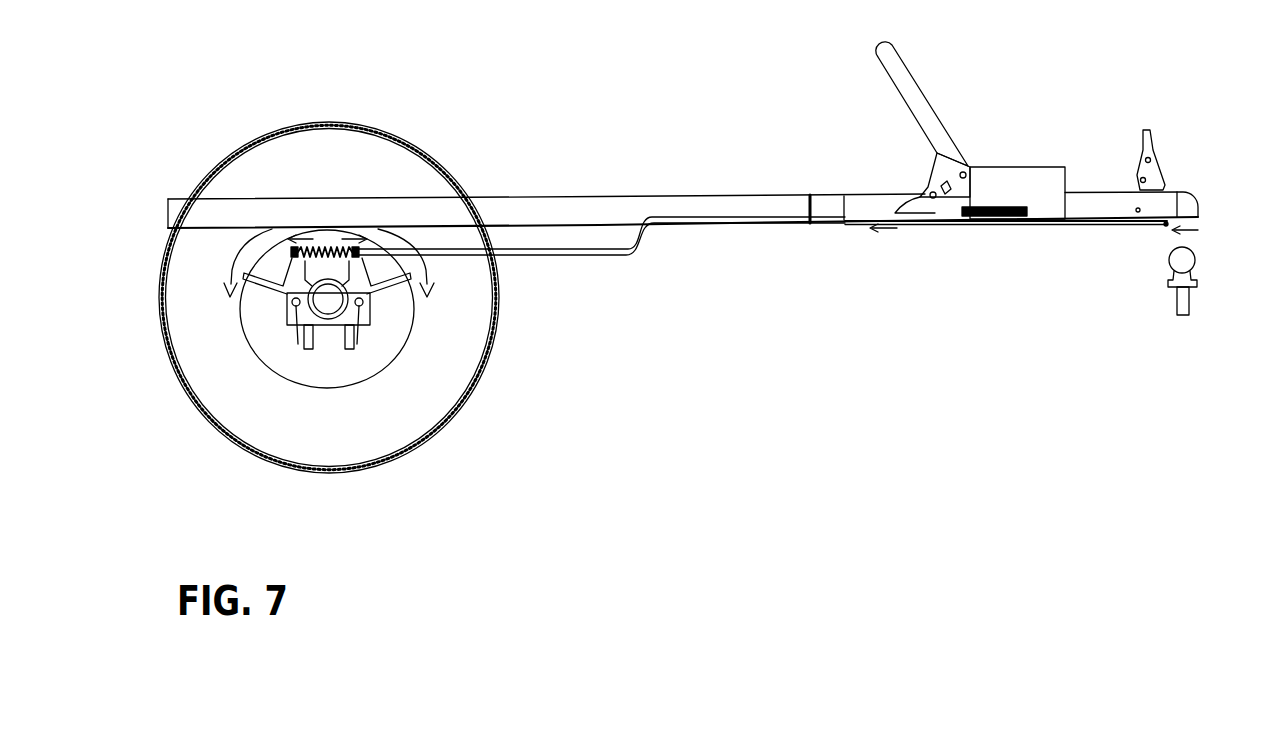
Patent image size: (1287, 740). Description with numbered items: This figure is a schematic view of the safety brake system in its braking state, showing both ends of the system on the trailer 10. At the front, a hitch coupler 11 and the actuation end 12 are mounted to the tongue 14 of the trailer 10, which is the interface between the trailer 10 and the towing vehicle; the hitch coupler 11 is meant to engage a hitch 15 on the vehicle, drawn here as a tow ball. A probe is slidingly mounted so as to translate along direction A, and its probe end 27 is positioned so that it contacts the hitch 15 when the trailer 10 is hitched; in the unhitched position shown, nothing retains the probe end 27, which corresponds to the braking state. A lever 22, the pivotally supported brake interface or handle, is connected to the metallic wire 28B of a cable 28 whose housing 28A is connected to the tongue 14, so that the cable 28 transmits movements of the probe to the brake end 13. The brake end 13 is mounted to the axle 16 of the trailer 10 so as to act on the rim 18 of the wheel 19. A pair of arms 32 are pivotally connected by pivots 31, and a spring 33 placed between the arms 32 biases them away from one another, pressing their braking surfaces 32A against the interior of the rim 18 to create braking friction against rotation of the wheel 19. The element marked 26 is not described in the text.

The trailer 10 is at (687, 160).
The hitch coupler 11 is at (1106, 192).
The actuation end 12 is at (1040, 187).
The brake end 13 is at (378, 200).
The tongue 14 is at (878, 196).
The hitch 15 is at (1194, 262).
The axle 16 is at (329, 303).
The rim 18 is at (398, 325).
The wheel 19 is at (500, 333).
The lever 22 is at (917, 90).
The slot / pad 26 is at (1003, 216).
The probe end 27 is at (1168, 226).
The cable 28 is at (804, 185).
The housing 28A is at (672, 222).
The metallic wire 28B is at (832, 225).
The pivots 31 is at (330, 334).
The arms 32 is at (272, 292).
The braking surfaces 32A is at (250, 284).
The spring 33 is at (325, 250).
The direction A is at (888, 237).